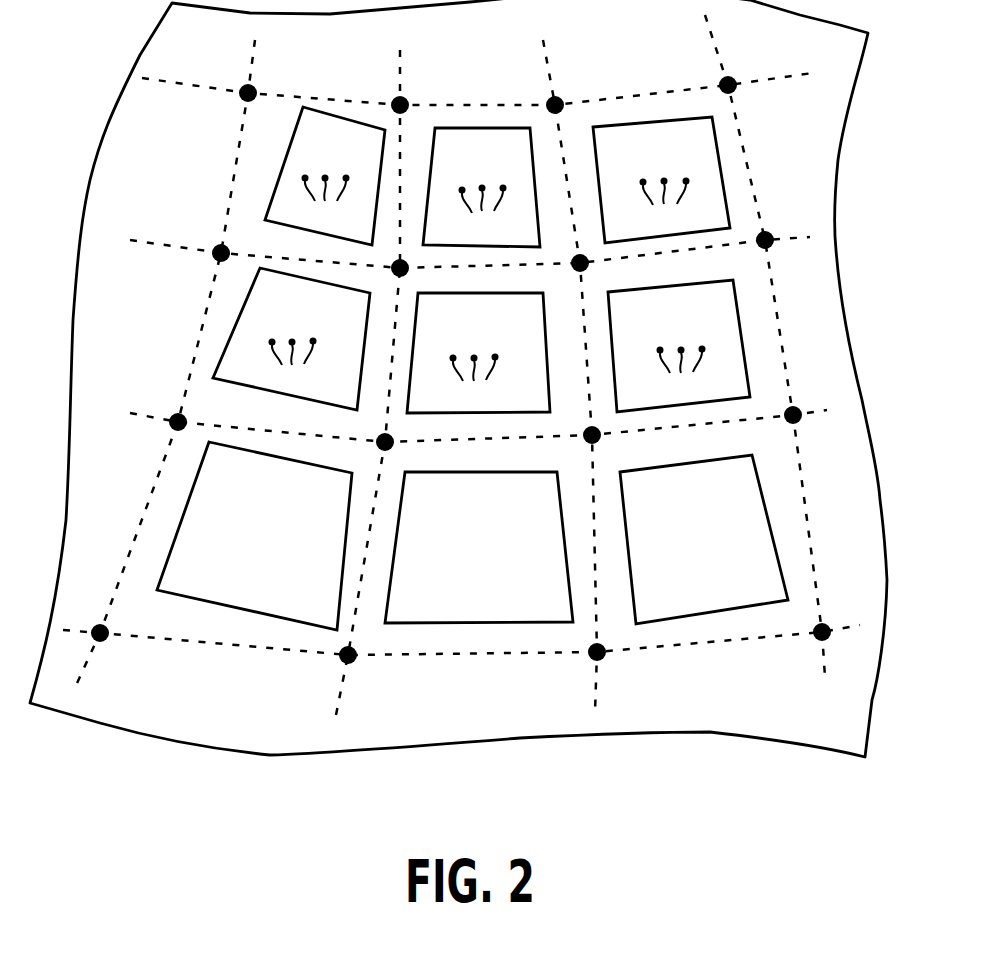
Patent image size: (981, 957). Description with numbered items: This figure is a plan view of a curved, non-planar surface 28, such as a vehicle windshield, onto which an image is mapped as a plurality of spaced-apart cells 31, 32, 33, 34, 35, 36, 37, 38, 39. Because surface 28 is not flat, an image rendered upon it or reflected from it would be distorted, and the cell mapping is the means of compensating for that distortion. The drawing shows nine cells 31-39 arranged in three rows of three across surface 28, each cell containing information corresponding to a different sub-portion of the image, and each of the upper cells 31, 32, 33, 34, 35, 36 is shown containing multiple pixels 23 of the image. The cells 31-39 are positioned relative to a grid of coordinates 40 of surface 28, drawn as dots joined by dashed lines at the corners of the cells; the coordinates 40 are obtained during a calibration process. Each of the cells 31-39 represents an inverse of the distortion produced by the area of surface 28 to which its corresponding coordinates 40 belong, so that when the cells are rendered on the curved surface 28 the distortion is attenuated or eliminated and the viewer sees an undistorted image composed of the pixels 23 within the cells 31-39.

The pixels 23 is at (487, 293).
The surface 28 is at (804, 348).
The cell 31 is at (314, 160).
The cell 32 is at (464, 168).
The cell 33 is at (647, 160).
The cell 34 is at (280, 320).
The cell 35 is at (464, 337).
The cell 36 is at (664, 327).
The cell 37 is at (252, 508).
The cell 38 is at (459, 515).
The cell 39 is at (685, 503).
The coordinates 40 is at (221, 252).